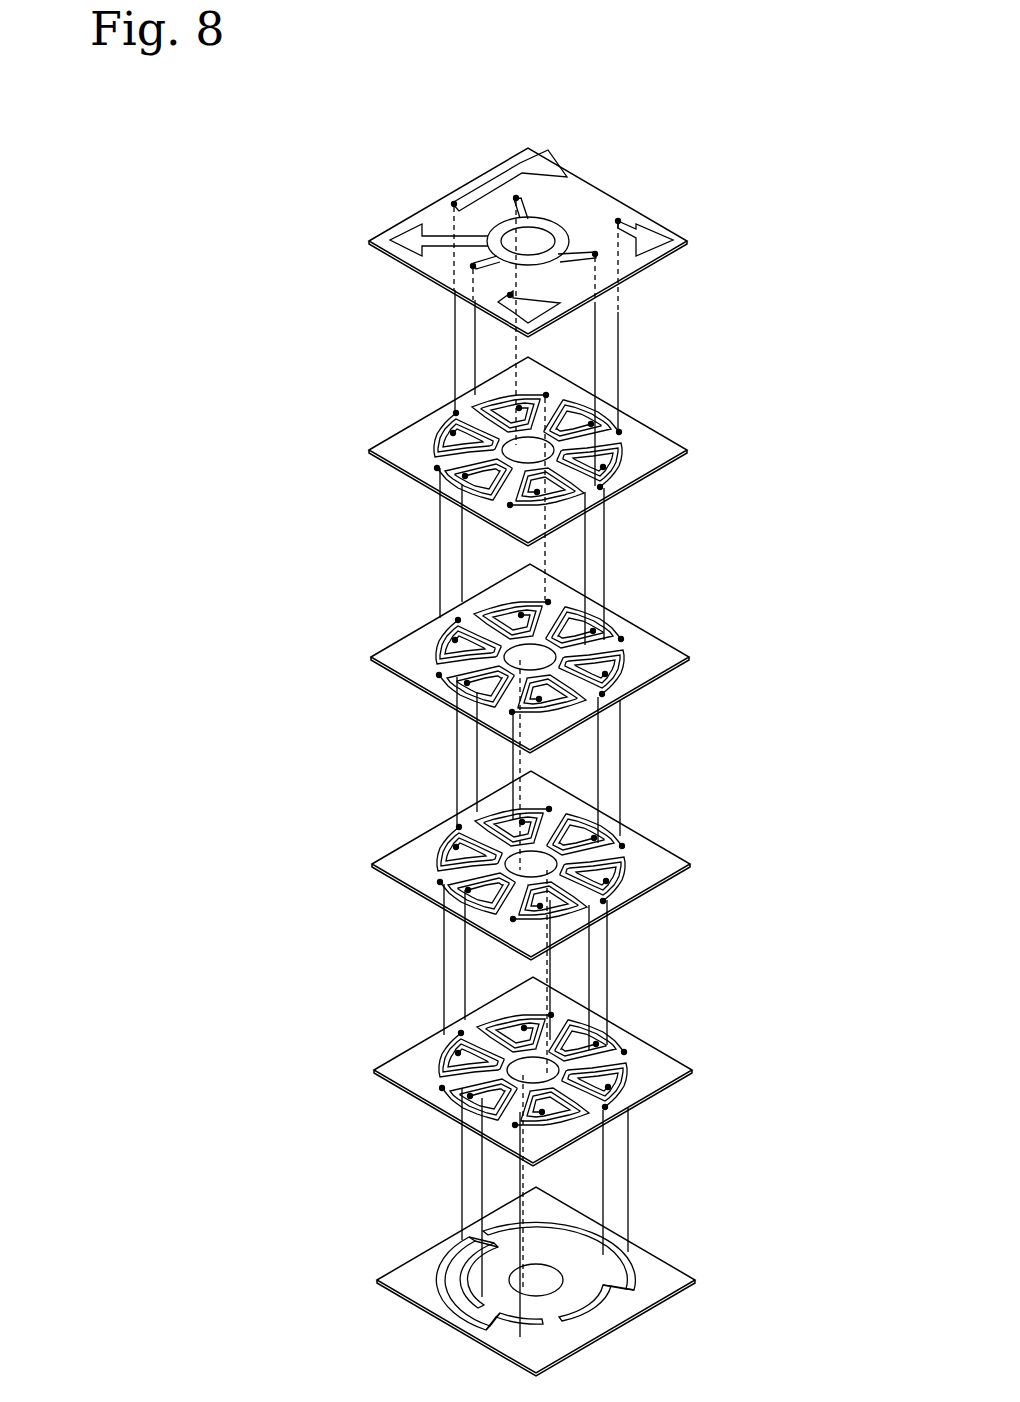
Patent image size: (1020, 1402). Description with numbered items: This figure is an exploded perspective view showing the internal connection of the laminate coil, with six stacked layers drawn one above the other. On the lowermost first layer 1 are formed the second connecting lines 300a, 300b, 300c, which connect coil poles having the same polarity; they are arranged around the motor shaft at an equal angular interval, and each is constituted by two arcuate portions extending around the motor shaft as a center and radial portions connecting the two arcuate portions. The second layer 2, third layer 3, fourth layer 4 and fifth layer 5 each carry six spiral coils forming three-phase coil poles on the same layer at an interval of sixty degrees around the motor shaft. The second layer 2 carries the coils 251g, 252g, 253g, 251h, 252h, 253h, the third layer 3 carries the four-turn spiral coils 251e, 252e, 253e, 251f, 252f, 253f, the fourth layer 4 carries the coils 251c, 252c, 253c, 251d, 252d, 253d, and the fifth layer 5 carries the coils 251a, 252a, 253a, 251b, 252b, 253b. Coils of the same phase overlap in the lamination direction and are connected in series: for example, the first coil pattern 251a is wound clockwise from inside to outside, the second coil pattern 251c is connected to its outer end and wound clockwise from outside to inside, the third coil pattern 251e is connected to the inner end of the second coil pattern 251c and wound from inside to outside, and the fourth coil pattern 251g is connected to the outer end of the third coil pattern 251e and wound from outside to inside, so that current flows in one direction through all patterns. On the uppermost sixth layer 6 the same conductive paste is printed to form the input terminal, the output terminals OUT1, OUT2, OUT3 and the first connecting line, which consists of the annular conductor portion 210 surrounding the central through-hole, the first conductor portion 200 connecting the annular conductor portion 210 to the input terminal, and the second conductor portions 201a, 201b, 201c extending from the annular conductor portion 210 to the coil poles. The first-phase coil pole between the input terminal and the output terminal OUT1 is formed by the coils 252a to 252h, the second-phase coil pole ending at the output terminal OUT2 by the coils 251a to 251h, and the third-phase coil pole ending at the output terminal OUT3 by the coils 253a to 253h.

The first layer 1 is at (503, 1281).
The second layer 2 is at (505, 1131).
The third layer 3 is at (504, 920).
The fourth layer 4 is at (503, 714).
The fifth layer 5 is at (503, 476).
The sixth layer 6 is at (511, 276).
The first conductor portion 200 is at (460, 200).
The second conductor portion 201a is at (520, 200).
The second conductor portion 201b is at (593, 250).
The second conductor portion 201c is at (470, 267).
The annular conductor portion 210 is at (612, 298).
The first coil pattern 251a is at (436, 485).
The coil 251b is at (617, 409).
The second coil pattern 251c is at (438, 692).
The coil 251d is at (619, 616).
The third coil pattern 251e is at (439, 899).
The coil 251f is at (618, 823).
The fourth coil pattern 251g is at (441, 1105).
The coil 251h is at (622, 1029).
The coil 252a is at (632, 471).
The coil 252b is at (424, 423).
The coil 252c is at (634, 678).
The coil 252d is at (426, 630).
The coil 252e is at (635, 885).
The coil 252f is at (427, 837).
The coil 252g is at (637, 1091).
The coil 252h is at (429, 1043).
The coil 253a is at (469, 392).
The coil 253b is at (589, 504).
The coil 253c is at (470, 599).
The coil 253d is at (594, 713).
The coil 253e is at (473, 806).
The coil 253f is at (591, 919).
The coil 253g is at (467, 1012).
The coil 253h is at (596, 1125).
The second connecting line 300a is at (470, 1262).
The second connecting line 300b is at (457, 1313).
The second connecting line 300c is at (627, 1307).
The output terminal OUT1 is at (523, 166).
The output terminal OUT2 is at (650, 233).
The output terminal OUT3 is at (547, 310).